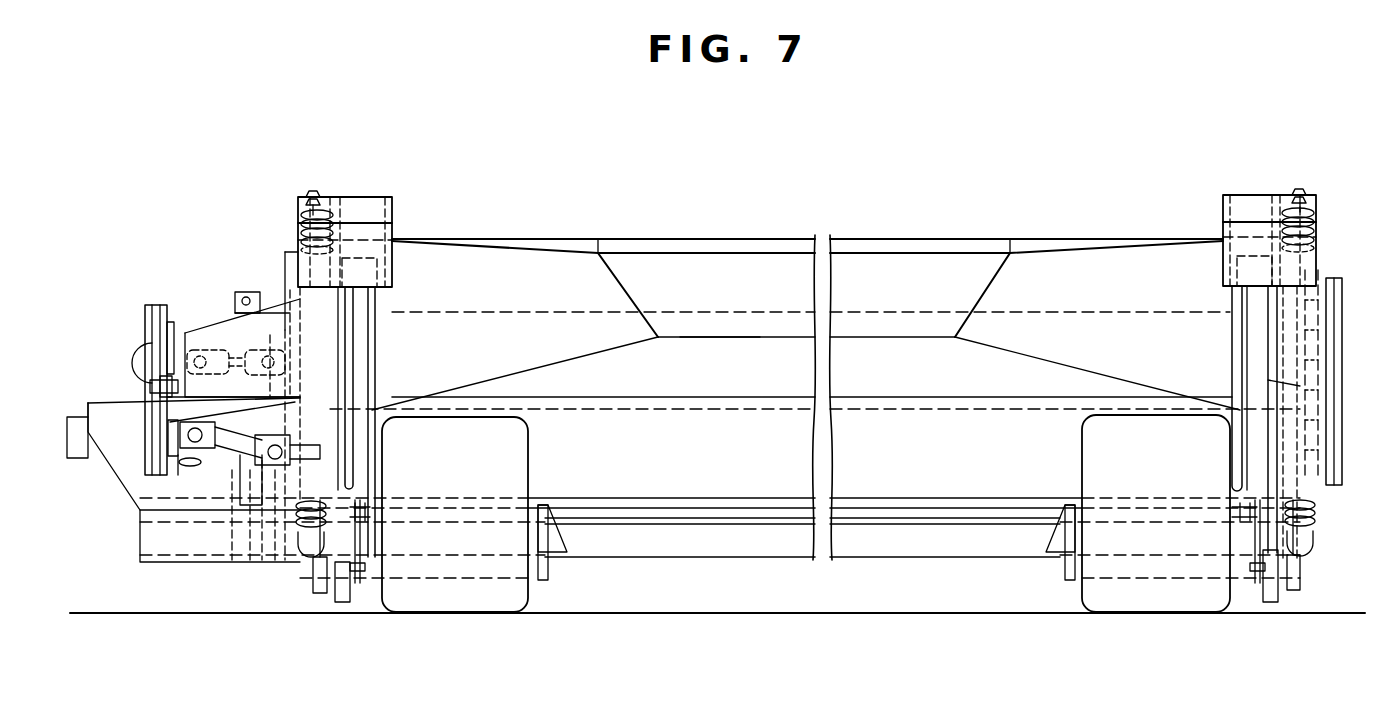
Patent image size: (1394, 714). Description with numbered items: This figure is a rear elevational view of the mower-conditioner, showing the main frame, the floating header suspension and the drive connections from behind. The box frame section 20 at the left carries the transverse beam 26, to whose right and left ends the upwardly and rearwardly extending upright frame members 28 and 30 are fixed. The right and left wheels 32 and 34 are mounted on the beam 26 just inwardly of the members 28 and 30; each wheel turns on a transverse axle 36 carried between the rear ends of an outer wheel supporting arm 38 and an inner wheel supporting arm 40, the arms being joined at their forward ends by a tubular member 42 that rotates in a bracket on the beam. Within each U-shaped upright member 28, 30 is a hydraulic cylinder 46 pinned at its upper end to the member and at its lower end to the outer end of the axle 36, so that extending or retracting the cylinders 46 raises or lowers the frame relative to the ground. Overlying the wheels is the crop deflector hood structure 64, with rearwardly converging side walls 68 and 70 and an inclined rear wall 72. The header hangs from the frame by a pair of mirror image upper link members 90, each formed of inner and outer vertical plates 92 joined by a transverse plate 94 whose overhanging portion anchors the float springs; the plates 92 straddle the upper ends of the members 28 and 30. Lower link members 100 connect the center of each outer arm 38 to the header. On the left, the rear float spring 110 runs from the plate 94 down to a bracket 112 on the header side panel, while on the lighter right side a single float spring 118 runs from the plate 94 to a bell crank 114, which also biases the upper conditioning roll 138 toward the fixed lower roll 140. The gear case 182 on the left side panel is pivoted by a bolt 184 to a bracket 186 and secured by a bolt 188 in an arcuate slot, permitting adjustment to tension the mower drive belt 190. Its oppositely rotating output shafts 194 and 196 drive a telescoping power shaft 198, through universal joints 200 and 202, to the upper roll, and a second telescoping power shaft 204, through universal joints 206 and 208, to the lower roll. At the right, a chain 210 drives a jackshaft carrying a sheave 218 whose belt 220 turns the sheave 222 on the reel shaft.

The box frame section 20 is at (118, 512).
The transverse beam 26 is at (790, 547).
The right upright frame member 28 is at (1275, 381).
The left upright frame member 30 is at (300, 299).
The right wheel 32 is at (1090, 597).
The left wheel 34 is at (518, 594).
The transverse axle 36 is at (455, 518).
The outer wheel supporting arm 38 is at (360, 545).
The inner wheel supporting arm 40 is at (553, 547).
The tubular member 42 is at (549, 572).
The hydraulic cylinder 46 is at (362, 338).
The crop deflector hood structure 64 is at (847, 211).
The right side wall 68 is at (1121, 255).
The left side wall 70 is at (478, 251).
The rear wall 72 is at (772, 265).
The upper link member 90 is at (398, 207).
The vertical plate 92 is at (381, 212).
The transverse plate 94 is at (340, 196).
The lower link member 100 is at (340, 598).
The rear float spring 110 is at (300, 228).
The bracket 112 is at (311, 566).
The bell crank 114 is at (1302, 526).
The float spring 118 is at (1318, 228).
The upper crop conditioning roll 138 is at (710, 348).
The lower crop conditioning roll 140 is at (708, 480).
The gear case 182 is at (155, 305).
The bolt 184 is at (155, 388).
The bracket 186 is at (273, 308).
The bolt 188 is at (228, 300).
The belt 190 is at (235, 460).
The gear case output shaft 194 is at (170, 358).
The gear case output shaft 196 is at (178, 433).
The telescoping power shaft 198 is at (223, 347).
The universal joint 200 is at (207, 348).
The universal joint 202 is at (233, 357).
The telescoping power shaft 204 is at (232, 443).
The universal joint 206 is at (192, 450).
The universal joint 208 is at (253, 450).
The chain 210 is at (1319, 277).
The sheave 218 is at (1343, 290).
The belt 220 is at (1336, 320).
The sheave 222 is at (1343, 462).